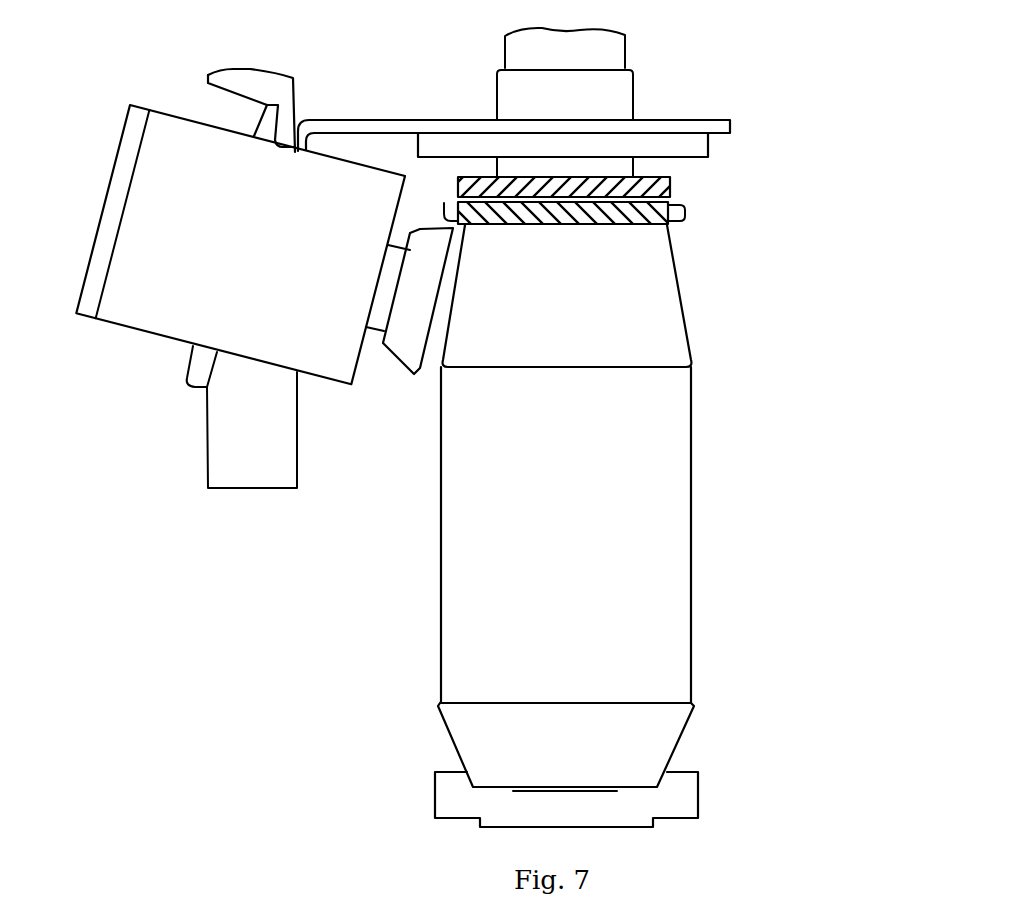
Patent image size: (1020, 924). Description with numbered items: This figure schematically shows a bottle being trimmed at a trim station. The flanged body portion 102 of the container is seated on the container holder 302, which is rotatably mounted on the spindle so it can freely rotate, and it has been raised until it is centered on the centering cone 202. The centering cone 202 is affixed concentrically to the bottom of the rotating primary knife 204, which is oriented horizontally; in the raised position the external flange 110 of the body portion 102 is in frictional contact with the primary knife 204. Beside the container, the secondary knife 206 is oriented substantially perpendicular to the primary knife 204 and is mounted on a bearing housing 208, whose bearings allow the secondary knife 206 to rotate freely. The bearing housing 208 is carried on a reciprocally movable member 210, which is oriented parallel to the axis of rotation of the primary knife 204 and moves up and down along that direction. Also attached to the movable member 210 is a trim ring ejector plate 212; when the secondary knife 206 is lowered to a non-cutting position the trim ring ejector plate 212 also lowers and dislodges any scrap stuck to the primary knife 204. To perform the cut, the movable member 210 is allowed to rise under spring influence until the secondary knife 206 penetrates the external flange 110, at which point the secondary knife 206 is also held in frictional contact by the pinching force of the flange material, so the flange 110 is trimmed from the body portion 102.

The body portion 102 is at (566, 508).
The external flange 110 is at (443, 208).
The centering cone 202 is at (664, 230).
The primary knife 204 is at (670, 186).
The secondary knife 206 is at (414, 375).
The bearing housing 208 is at (130, 338).
The movable member 210 is at (208, 74).
The trim ring ejector plate 212 is at (732, 135).
The container holder 302 is at (698, 788).